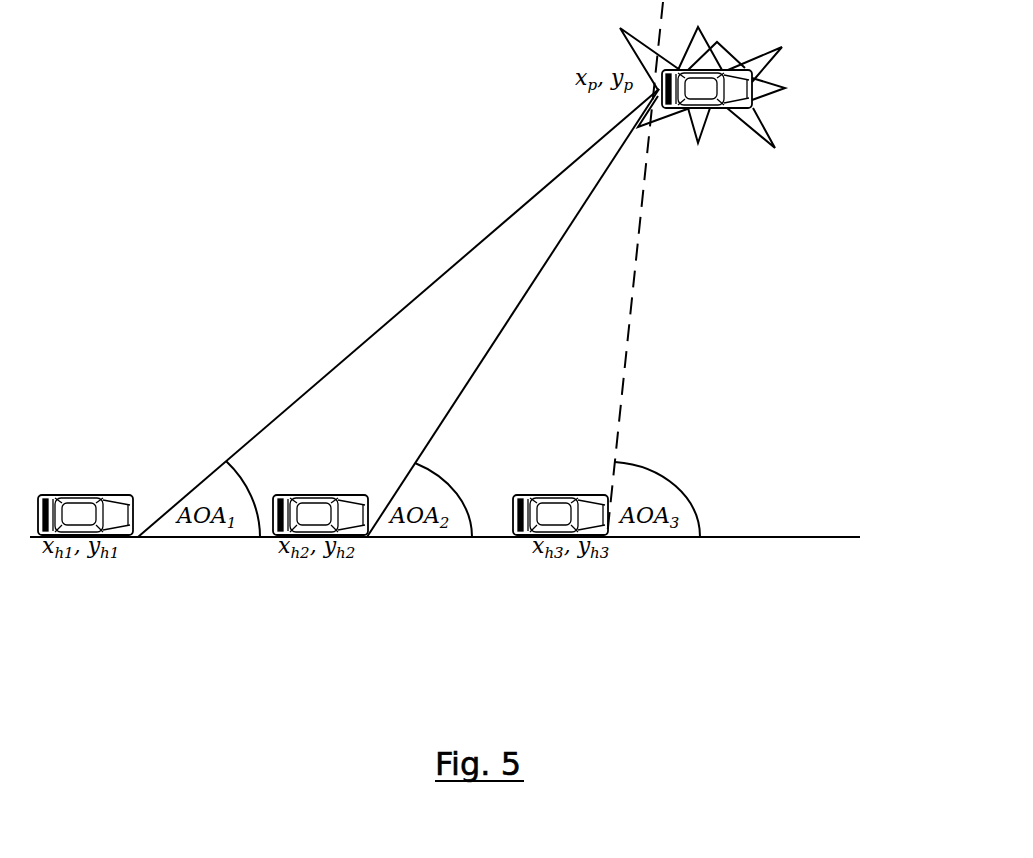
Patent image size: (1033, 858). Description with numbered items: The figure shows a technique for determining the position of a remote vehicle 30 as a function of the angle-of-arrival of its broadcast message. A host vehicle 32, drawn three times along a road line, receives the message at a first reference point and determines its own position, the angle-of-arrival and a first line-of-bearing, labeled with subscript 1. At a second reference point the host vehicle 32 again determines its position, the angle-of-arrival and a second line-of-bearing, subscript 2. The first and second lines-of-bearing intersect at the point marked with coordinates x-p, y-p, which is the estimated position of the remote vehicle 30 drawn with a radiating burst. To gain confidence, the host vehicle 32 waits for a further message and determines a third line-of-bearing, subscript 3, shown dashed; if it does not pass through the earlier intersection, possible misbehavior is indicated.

The remote vehicle 30 is at (717, 109).
The host vehicle 32 is at (103, 497).
The line of bearing LOB1 / angle of arrival AOA1 1 is at (398, 313).
The line of bearing LOB2 / angle of arrival AOA2 2 is at (513, 313).
The line of bearing LOB3 / angle of arrival AOA3 3 is at (631, 269).